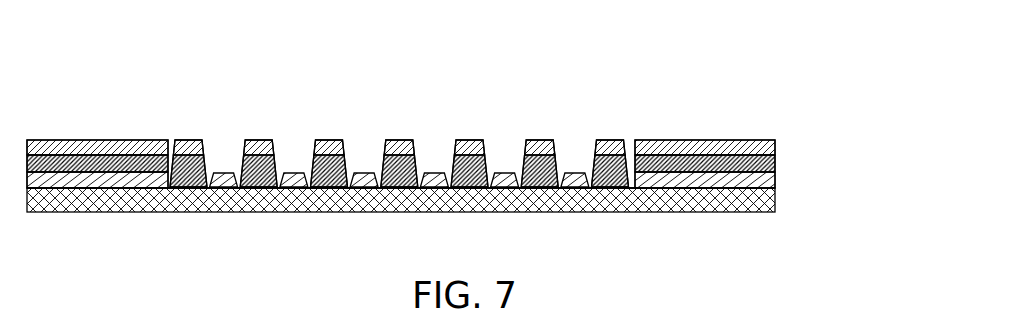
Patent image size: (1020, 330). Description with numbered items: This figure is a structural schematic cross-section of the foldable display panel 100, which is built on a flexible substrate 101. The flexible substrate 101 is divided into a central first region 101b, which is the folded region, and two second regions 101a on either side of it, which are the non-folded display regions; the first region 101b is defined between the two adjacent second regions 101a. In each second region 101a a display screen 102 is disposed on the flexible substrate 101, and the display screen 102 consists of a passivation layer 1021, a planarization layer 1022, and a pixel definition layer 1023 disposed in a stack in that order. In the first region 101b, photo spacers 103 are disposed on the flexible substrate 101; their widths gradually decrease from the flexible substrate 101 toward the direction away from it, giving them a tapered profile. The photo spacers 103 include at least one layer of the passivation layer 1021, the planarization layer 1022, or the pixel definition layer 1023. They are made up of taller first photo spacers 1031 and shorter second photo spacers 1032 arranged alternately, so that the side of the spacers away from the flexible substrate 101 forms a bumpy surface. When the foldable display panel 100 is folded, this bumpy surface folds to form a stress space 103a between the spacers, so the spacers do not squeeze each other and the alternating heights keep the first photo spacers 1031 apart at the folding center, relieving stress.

The foldable display panel 100 is at (57, 92).
The flexible substrate 101 is at (777, 199).
The second regions 101a is at (168, 217).
The first region 101b is at (634, 230).
The display screens 102 is at (467, 162).
The passivation layer 1021 is at (768, 178).
The planarization layer 1022 is at (777, 163).
The pixel definition layer 1023 is at (777, 146).
The photo spacers 103 is at (409, 126).
The first photo spacers 1031 is at (599, 157).
The second photo spacers 1032 is at (400, 143).
The stress space 103a is at (221, 148).